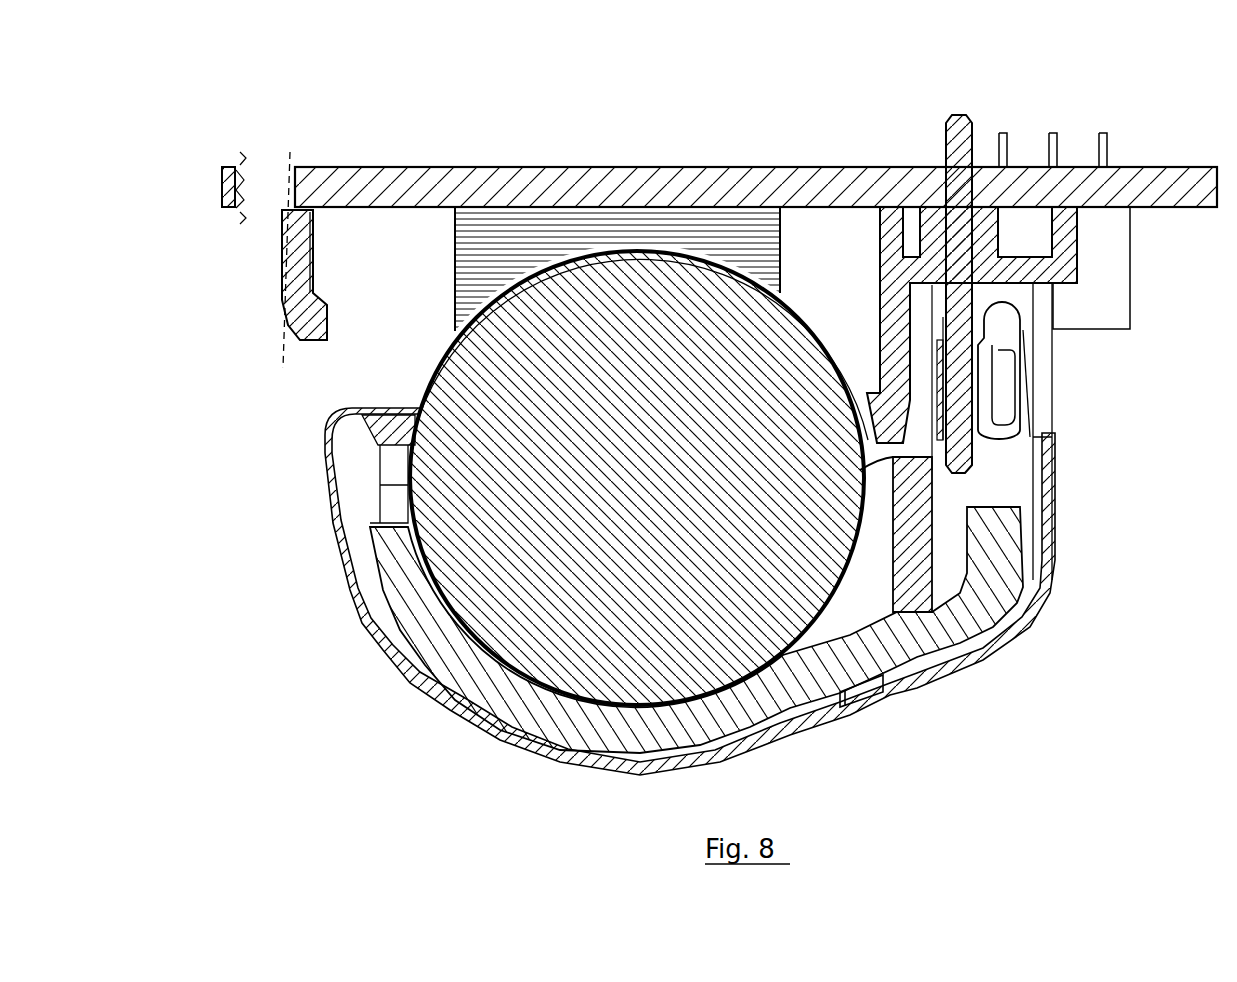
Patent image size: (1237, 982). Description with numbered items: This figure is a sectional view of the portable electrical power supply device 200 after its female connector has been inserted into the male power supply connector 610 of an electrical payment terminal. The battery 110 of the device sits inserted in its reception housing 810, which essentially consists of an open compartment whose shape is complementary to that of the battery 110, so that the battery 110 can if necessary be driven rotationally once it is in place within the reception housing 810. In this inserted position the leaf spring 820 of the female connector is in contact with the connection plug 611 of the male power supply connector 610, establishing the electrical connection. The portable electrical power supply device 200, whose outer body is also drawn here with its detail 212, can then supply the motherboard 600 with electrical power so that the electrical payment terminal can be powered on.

The motherboard 600 is at (325, 162).
The battery 110 is at (520, 420).
The connection plug 611 is at (963, 395).
The male power supply connector 610 is at (978, 237).
The reception housing 810 is at (476, 258).
The leaf spring 820 is at (1000, 375).
The tab 212 is at (823, 717).
The portable electrical power supply device 200 is at (500, 769).